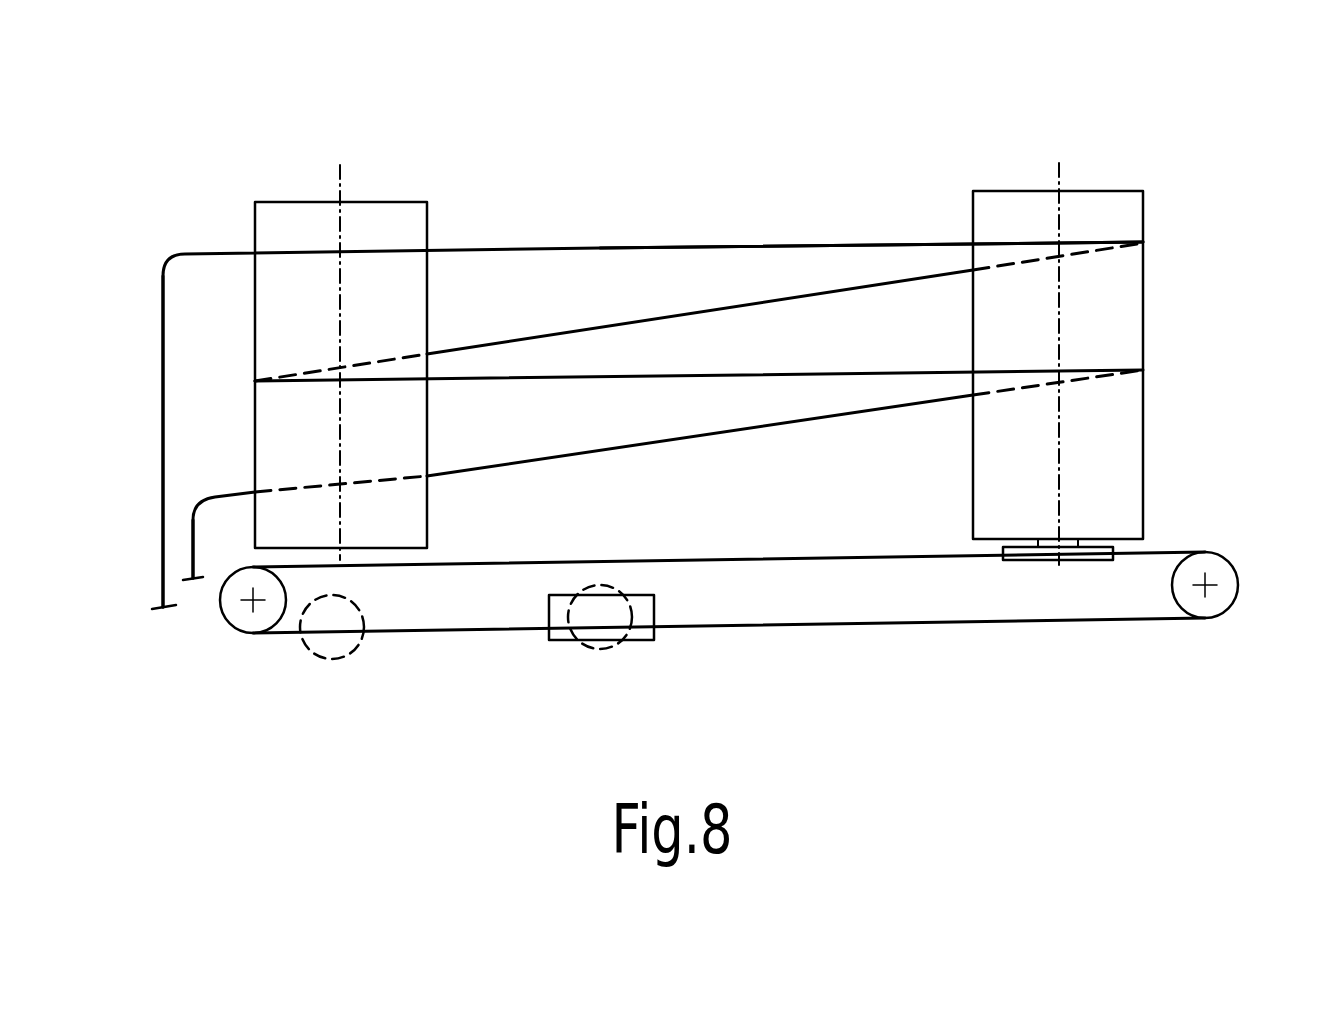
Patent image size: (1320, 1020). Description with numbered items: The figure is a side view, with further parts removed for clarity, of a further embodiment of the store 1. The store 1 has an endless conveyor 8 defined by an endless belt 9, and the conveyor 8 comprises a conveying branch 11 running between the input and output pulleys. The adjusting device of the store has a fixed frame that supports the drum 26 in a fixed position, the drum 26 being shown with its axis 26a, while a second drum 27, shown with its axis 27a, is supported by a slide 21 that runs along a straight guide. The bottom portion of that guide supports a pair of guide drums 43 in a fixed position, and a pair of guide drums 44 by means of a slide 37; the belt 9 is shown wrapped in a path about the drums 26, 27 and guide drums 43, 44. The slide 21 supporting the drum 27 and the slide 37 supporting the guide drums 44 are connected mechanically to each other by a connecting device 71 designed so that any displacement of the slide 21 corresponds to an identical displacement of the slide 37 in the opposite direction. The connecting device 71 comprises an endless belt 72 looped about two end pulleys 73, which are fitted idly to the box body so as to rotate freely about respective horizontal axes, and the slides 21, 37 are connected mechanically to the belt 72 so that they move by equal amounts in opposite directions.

The store 1 is at (657, 206).
The endless conveyor 8 is at (565, 228).
The endless belt 9 is at (163, 530).
The conveying branch 11 is at (827, 233).
The slide 21 is at (1045, 560).
The drum 26 is at (298, 212).
The axis of first drum 26a is at (343, 182).
The drum 27 is at (1135, 208).
The axis of second drum 27a is at (1062, 176).
The slide 37 is at (645, 633).
The guide drums 43 is at (333, 662).
The guide drums 44 is at (590, 652).
The connecting device 71 is at (954, 647).
The endless belt 72 is at (827, 627).
The end pulleys 73 is at (243, 623).